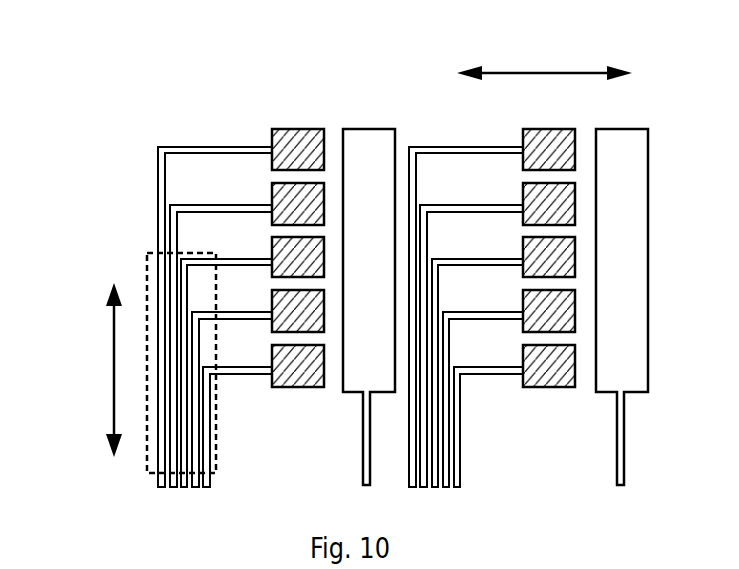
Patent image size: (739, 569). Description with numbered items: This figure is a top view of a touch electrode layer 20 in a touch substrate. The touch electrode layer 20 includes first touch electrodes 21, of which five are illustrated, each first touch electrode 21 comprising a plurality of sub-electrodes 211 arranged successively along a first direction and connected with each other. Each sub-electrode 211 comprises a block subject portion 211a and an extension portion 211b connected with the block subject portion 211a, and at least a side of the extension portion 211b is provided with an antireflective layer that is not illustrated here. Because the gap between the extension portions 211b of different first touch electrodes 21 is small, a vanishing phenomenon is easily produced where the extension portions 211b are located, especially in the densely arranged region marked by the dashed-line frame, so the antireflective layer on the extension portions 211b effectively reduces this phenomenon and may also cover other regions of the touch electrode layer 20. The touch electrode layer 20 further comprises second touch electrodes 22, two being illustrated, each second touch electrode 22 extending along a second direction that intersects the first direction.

The touch electrode layer 20 is at (93, 50).
The first touch electrode 21 is at (356, 252).
The sub-electrode 211 is at (280, 62).
The block subject portion 211a is at (300, 150).
The extension portion 211b is at (218, 147).
The second touch electrode 22 is at (609, 383).